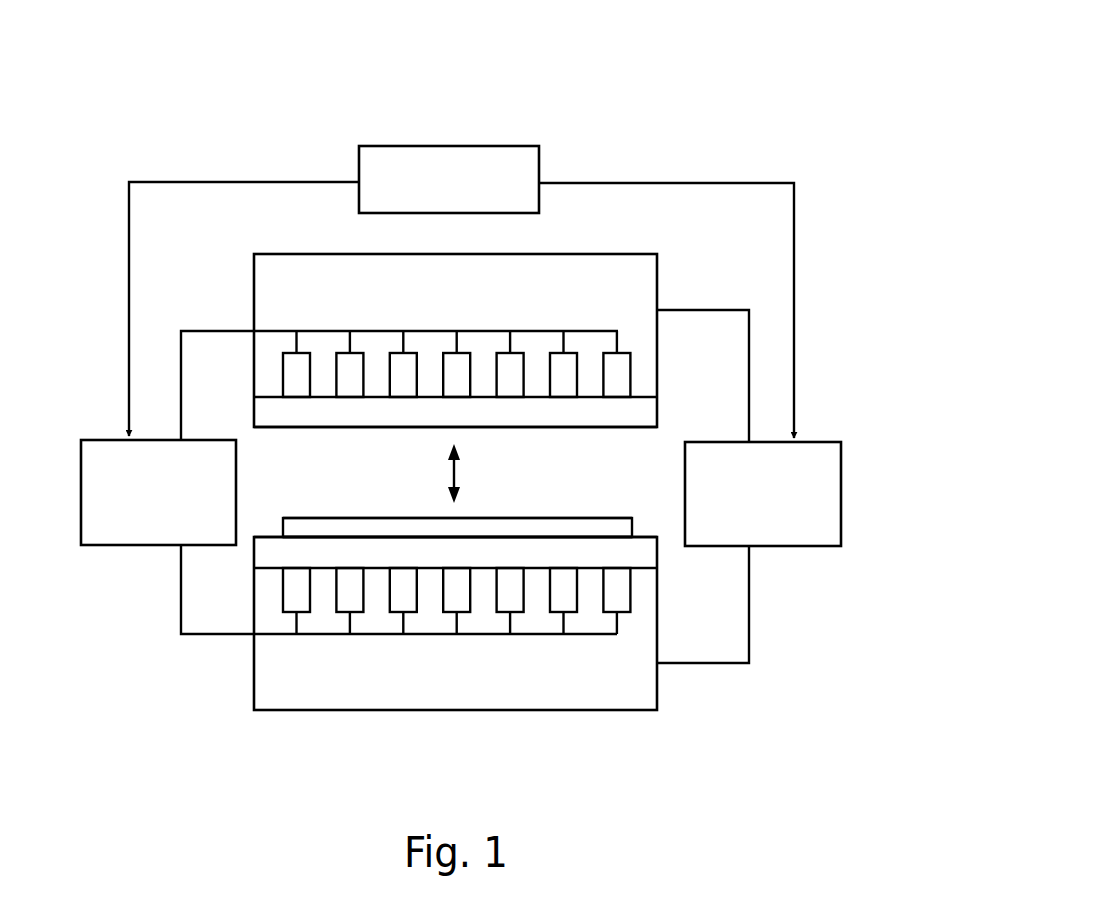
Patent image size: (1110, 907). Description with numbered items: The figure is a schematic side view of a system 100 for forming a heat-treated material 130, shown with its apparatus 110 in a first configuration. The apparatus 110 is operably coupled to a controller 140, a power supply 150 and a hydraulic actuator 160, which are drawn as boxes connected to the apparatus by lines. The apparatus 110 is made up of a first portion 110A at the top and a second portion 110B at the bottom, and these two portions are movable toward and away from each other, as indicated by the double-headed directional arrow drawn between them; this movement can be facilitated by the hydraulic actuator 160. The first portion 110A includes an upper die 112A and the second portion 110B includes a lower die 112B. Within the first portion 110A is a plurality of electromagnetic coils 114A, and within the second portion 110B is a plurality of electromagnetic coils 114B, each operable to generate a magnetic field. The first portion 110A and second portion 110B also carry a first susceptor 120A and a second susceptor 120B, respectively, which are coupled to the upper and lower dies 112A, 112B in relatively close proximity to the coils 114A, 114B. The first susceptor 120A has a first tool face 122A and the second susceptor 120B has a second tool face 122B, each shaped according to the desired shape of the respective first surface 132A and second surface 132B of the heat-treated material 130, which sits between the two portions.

The system 100 is at (712, 108).
The apparatus 110 is at (578, 236).
The first portion 110A is at (498, 361).
The second portion 110B is at (482, 597).
The upper die 112A is at (645, 292).
The lower die 112B is at (627, 693).
The electromagnetic coils 114A is at (620, 376).
The electromagnetic coils 114B is at (617, 585).
The first susceptor 120A is at (268, 413).
The second susceptor 120B is at (263, 553).
The first tool face 122A is at (357, 423).
The second tool face 122B is at (607, 537).
The heat-treated material 130 is at (439, 505).
The first surface 132A is at (560, 517).
The second surface 132B is at (372, 538).
The controller 140 is at (496, 140).
The power supply 150 is at (95, 434).
The hydraulic actuator 160 is at (847, 480).